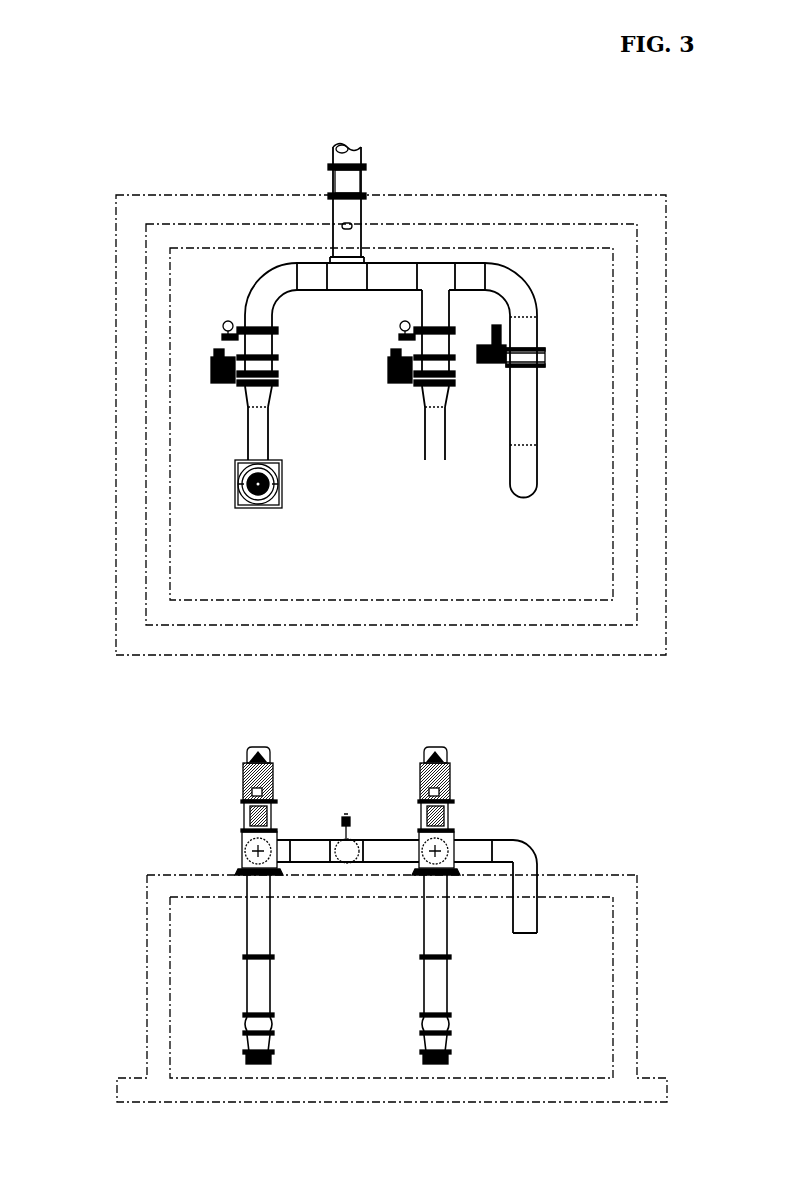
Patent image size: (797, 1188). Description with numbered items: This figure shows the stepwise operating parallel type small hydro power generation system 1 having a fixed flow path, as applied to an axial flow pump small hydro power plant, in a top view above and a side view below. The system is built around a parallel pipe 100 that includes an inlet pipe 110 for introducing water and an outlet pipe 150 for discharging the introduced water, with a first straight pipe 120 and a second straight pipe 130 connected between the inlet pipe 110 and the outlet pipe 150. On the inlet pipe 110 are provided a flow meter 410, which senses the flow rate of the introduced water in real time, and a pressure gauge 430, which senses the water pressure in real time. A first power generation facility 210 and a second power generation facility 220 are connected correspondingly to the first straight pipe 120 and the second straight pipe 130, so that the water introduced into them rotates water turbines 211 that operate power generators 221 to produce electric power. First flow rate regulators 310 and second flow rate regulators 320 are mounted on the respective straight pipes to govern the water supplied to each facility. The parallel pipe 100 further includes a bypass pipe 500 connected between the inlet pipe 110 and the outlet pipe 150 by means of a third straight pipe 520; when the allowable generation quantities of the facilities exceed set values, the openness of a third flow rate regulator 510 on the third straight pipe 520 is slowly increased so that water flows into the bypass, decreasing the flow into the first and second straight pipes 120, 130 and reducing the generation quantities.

The stepwise operating parallel type small hydro power generation system 1 is at (190, 94).
The parallel pipe 100 is at (298, 242).
The inlet pipe 110 is at (350, 148).
The first straight pipe 120 is at (240, 435).
The second straight pipe 130 is at (438, 437).
The outlet pipe 150 is at (253, 1064).
The first power generation facility 210 is at (232, 486).
The water turbine 211 is at (245, 855).
The second power generation facility 220 is at (550, 765).
The power generator 221 is at (243, 782).
The first flow rate regulator 310 is at (210, 372).
The second flow rate regulator 320 is at (388, 366).
The flow meter 410 is at (360, 181).
The pressure gauge 430 is at (352, 226).
The bypass pipe 500 is at (718, 300).
The third flow rate regulator 510 is at (528, 412).
The third straight pipe 520 is at (545, 352).